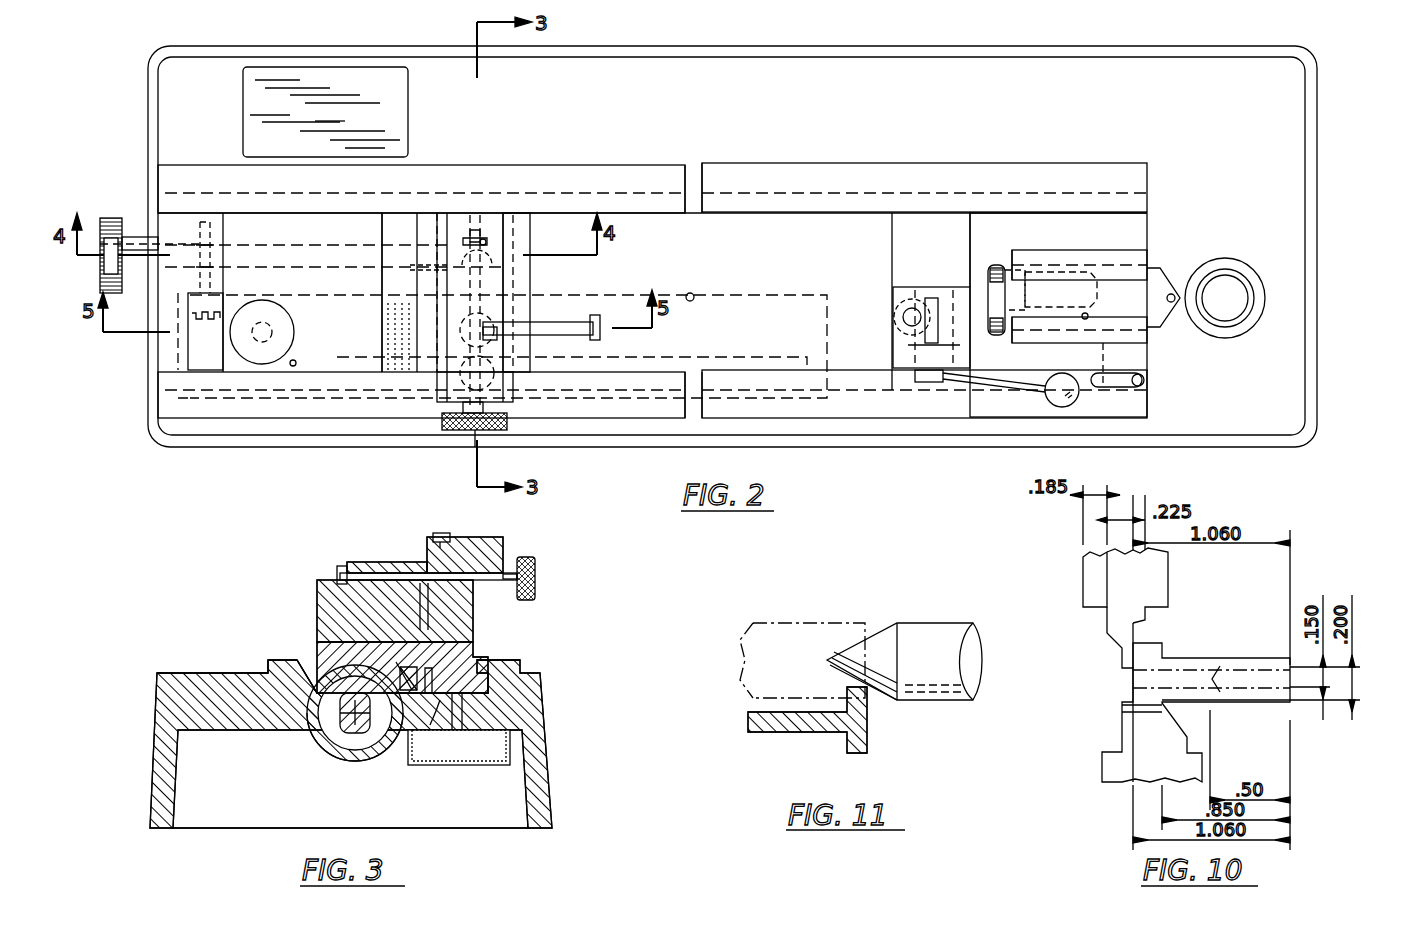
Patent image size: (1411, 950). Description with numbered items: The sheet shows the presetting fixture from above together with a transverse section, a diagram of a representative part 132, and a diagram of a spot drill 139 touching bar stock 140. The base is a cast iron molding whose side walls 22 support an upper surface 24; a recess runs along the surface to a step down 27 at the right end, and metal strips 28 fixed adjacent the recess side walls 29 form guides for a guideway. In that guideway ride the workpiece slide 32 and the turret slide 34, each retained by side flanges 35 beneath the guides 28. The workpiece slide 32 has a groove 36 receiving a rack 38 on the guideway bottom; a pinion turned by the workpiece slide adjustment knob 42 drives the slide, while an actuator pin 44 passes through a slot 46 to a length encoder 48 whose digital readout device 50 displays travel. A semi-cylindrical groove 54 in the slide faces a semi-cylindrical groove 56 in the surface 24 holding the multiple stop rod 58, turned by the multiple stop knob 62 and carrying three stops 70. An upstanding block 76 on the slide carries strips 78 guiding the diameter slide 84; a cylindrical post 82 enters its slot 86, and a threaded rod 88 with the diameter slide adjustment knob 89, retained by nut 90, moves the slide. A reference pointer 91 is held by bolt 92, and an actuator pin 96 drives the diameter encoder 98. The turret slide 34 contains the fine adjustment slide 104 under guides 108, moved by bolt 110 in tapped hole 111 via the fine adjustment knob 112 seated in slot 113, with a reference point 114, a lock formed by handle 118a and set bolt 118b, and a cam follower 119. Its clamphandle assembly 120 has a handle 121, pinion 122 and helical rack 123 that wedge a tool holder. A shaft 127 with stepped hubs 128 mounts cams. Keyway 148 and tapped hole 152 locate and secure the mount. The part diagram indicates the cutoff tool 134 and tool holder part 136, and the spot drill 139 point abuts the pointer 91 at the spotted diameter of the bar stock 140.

In FIG. 2, the side walls 22 is at (740, 50).
In FIG. 3, the side walls 22 is at (552, 775).
In FIG. 2, the upper surface 24 is at (592, 126).
In FIG. 3, the upper surface 24 is at (165, 673).
In FIG. 2, the step down 27 is at (1150, 195).
In FIG. 2, the metal strips 28 is at (808, 172).
In FIG. 3, the metal strips 28 is at (270, 660).
In FIG. 3, the side walls of recess 29 is at (298, 660).
In FIG. 2, the workpiece slide 32 is at (458, 150).
In FIG. 2, the turret slide 34 is at (1047, 150).
In FIG. 3, the side flanges 35 is at (317, 640).
In FIG. 3, the groove 36 is at (405, 672).
In FIG. 2, the rack 38 is at (198, 300).
In FIG. 3, the rack 38 is at (432, 725).
In FIG. 2, the workpiece slide adjustment knob 42 is at (205, 331).
In FIG. 2, the actuator pin 44 is at (293, 360).
In FIG. 2, the slot 46 is at (342, 358).
In FIG. 3, the slot 46 is at (465, 712).
In FIG. 3, the length encoder 48 is at (475, 765).
In FIG. 2, the digital readout device 50 is at (325, 112).
In FIG. 3, the semi-cylindrical groove 54 is at (310, 725).
In FIG. 3, the semi-cylindrical groove 56 is at (328, 748).
In FIG. 3, the multiple stop rod 58 is at (355, 704).
In FIG. 2, the multiple stop knob 62 is at (110, 218).
In FIG. 3, the stops 70 is at (355, 735).
In FIG. 2, the rectangular block 76 is at (522, 230).
In FIG. 3, the rectangular block 76 is at (475, 622).
In FIG. 2, the metal strips 78 is at (497, 215).
In FIG. 2, the cylindrical post 82 is at (515, 340).
In FIG. 3, the cylindrical post 82 is at (425, 572).
In FIG. 3, the diameter slide 84 is at (490, 537).
In FIG. 2, the slot 86 is at (513, 384).
In FIG. 3, the slot 86 is at (366, 562).
In FIG. 2, the threaded rod 88 is at (500, 402).
In FIG. 3, the threaded rod 88 is at (503, 560).
In FIG. 2, the diameter slide adjustment knob 89 is at (462, 432).
In FIG. 3, the diameter slide adjustment knob 89 is at (535, 580).
In FIG. 2, the nut 90 is at (487, 244).
In FIG. 3, the nut 90 is at (338, 570).
In FIG. 2, the reference pointer 91 is at (600, 330).
In FIG. 3, the reference pointer 91 is at (448, 535).
In FIG. 11, the reference pointer 91 is at (790, 735).
In FIG. 3, the bolt 92 is at (440, 533).
In FIG. 2, the actuator pin 96 is at (415, 268).
In FIG. 2, the diameter encoder 98 is at (398, 215).
In FIG. 2, the fine adjustment slide 104 is at (1147, 307).
In FIG. 2, the guides 108 is at (1140, 257).
In FIG. 2, the bolt 110 is at (1037, 275).
In FIG. 2, the tapped hole 111 is at (1080, 275).
In FIG. 2, the fine adjustment knob 112 is at (988, 300).
In FIG. 2, the slot 113 is at (1000, 265).
In FIG. 2, the reference point 114 is at (1085, 320).
In FIG. 2, the handle 118a is at (1143, 385).
In FIG. 2, the set bolt 118b is at (1140, 362).
In FIG. 2, the cam follower 119 is at (1172, 303).
In FIG. 2, the clamphandle assembly 120 is at (930, 382).
In FIG. 2, the handle 121 is at (1020, 393).
In FIG. 2, the pinion 122 is at (893, 334).
In FIG. 2, the helical rack 123 is at (905, 312).
In FIG. 2, the shaft 127 is at (1226, 258).
In FIG. 2, the hubs 128 is at (1228, 312).
In FIG. 10, the representative part 132 is at (1162, 660).
In FIG. 10, the cutoff tool 134 is at (1110, 664).
In FIG. 10, the part of tool holder 136 is at (1095, 592).
In FIG. 11, the spot drill 139 is at (920, 628).
In FIG. 11, the bar stock 140 is at (800, 674).
In FIG. 2, the keyway 148 is at (690, 165).
In FIG. 2, the tapped hole 152 is at (692, 292).